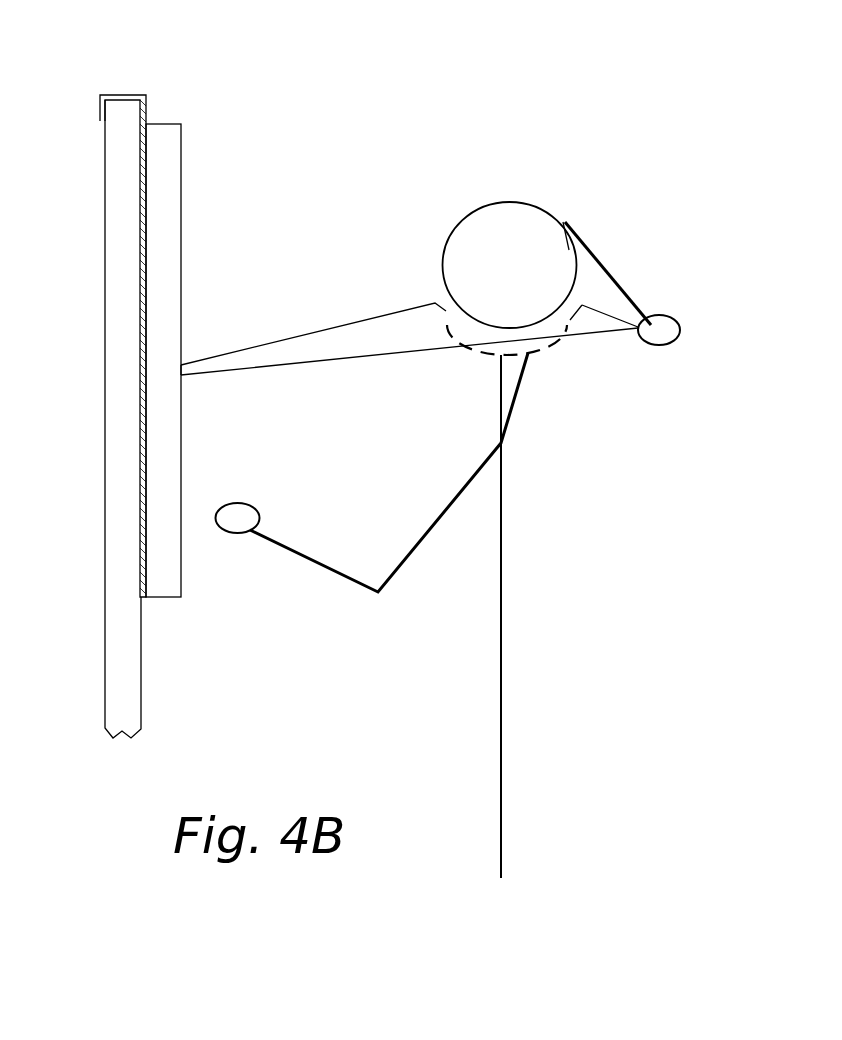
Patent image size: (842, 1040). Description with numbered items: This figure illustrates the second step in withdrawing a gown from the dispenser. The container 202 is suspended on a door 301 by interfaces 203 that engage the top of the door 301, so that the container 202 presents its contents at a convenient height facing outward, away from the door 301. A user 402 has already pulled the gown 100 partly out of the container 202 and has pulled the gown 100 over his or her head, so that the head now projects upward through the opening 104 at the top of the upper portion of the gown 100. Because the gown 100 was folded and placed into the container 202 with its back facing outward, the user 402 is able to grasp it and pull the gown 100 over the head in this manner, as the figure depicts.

The gown 100 is at (388, 338).
The opening 104 is at (505, 330).
The container 202 is at (162, 124).
The interfaces 203 is at (134, 96).
The door 301 is at (106, 264).
The user 402 is at (563, 404).